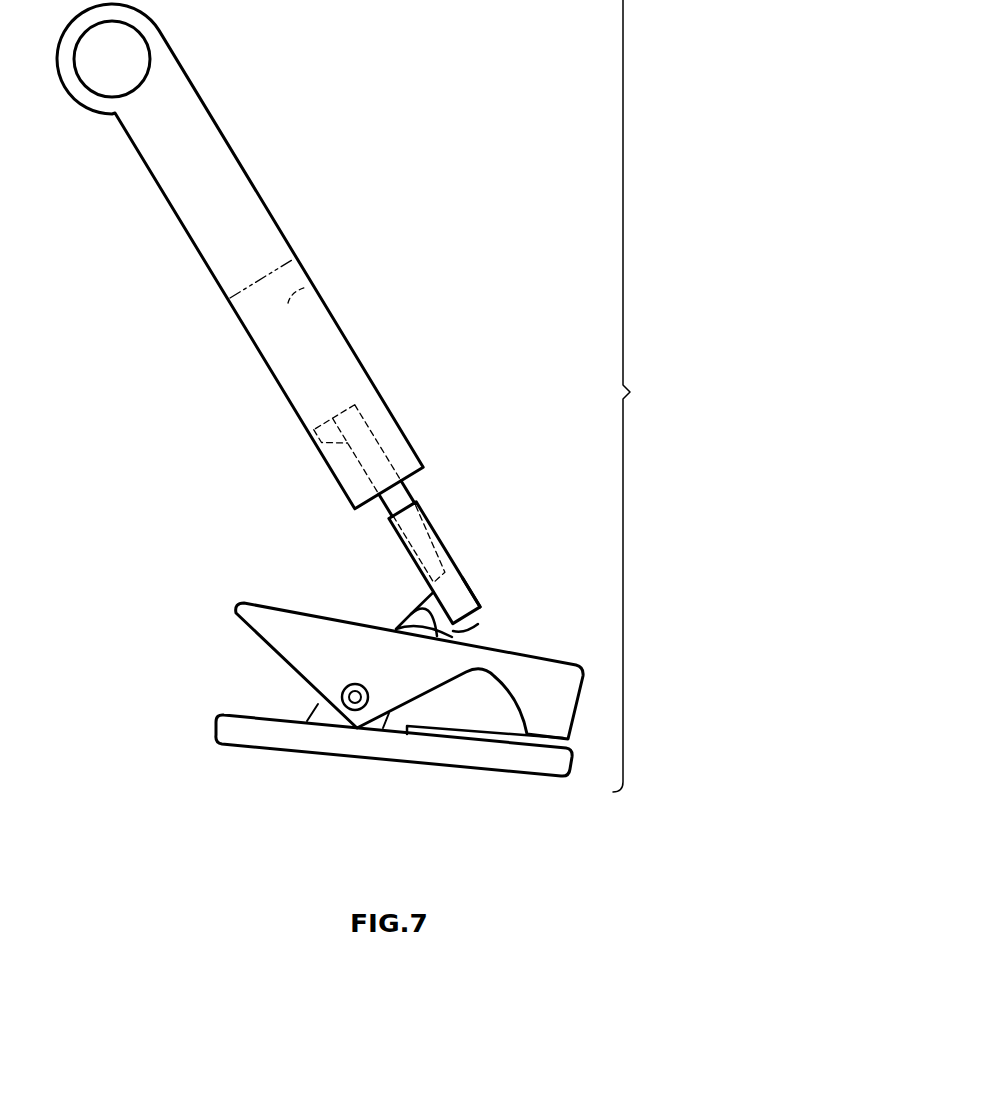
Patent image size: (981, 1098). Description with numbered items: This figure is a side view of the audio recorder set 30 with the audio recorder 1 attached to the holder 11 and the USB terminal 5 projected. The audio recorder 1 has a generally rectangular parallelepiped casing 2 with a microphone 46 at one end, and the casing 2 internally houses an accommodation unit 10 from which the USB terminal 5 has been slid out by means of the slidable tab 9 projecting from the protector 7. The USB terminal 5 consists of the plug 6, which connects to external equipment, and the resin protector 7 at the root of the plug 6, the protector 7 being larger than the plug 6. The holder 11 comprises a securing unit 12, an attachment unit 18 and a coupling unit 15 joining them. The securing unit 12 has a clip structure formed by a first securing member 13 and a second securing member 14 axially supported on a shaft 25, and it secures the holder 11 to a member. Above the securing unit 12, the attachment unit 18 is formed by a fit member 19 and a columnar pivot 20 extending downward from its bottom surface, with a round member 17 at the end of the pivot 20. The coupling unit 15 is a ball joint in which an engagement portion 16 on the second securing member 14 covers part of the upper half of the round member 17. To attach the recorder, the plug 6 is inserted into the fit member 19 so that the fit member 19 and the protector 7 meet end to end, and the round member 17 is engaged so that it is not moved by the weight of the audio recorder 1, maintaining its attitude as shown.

The audio recorder 1 is at (218, 76).
The casing 2 is at (229, 147).
The microphone 46 is at (95, 78).
The accommodation unit 10 is at (311, 291).
The slidable tab 9 is at (322, 443).
The USB terminal 5 is at (489, 468).
The protector 7 is at (408, 492).
The plug 6 is at (430, 524).
The holder 11 is at (467, 790).
The securing unit 12 is at (156, 638).
The second securing member 14 is at (250, 633).
The first securing member 13 is at (240, 713).
The shaft 25 is at (355, 710).
The coupling unit 15 is at (325, 540).
The engagement portion 16 is at (428, 618).
The round member 17 is at (403, 628).
The attachment unit 18 is at (552, 563).
The fit member 19 is at (468, 588).
The pivot 20 is at (452, 633).
The audio recorder set 30 is at (667, 408).